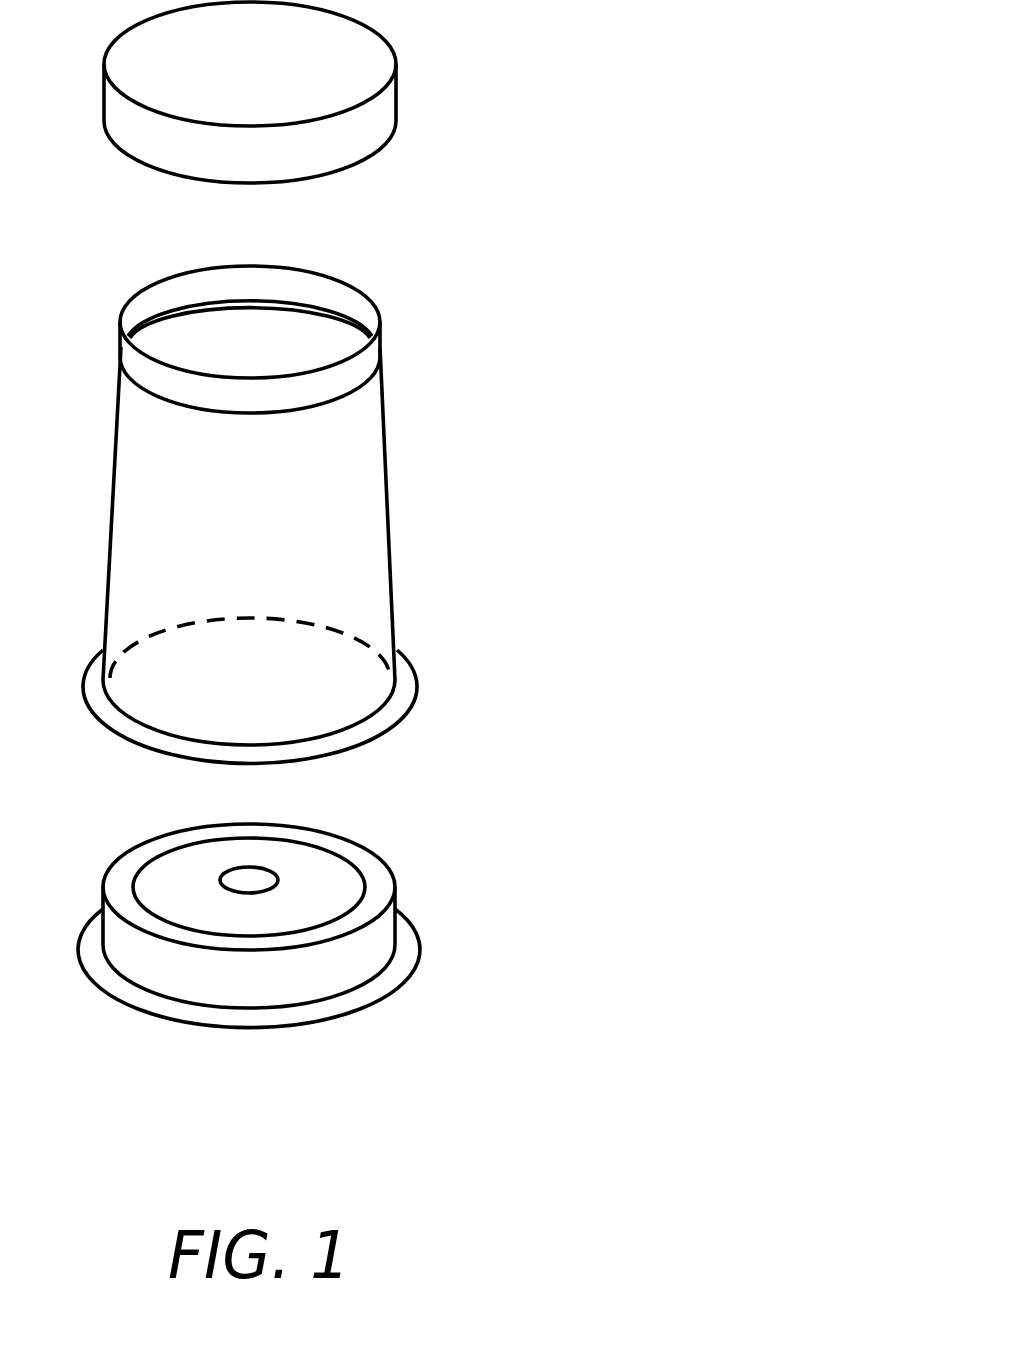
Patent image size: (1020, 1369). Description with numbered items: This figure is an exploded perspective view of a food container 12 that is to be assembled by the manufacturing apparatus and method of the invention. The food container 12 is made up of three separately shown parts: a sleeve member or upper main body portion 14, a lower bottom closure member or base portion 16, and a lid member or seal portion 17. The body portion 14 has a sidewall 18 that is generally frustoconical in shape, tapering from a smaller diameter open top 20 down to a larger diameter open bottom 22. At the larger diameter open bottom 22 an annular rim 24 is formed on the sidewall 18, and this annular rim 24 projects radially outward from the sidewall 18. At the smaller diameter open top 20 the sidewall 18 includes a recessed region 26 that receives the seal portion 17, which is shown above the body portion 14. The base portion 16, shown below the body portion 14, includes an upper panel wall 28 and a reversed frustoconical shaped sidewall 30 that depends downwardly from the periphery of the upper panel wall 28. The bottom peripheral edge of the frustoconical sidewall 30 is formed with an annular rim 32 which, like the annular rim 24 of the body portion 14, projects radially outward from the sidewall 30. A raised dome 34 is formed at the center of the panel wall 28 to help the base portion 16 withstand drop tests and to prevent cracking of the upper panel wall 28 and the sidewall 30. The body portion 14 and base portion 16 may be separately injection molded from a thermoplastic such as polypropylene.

The food container 12 is at (623, 173).
The upper main body portion 14 is at (342, 486).
The base portion 16 is at (347, 917).
The seal portion 17 is at (397, 85).
The sidewall 18 is at (393, 612).
The smaller diameter open top 20 is at (363, 315).
The larger diameter open bottom 22 is at (333, 635).
The annular rim 24 is at (393, 712).
The recessed region 26 is at (368, 365).
The upper panel wall 28 is at (348, 852).
The reversed frustoconical shaped sidewall 30 is at (377, 943).
The annular rim 32 is at (367, 992).
The raised dome 34 is at (250, 877).